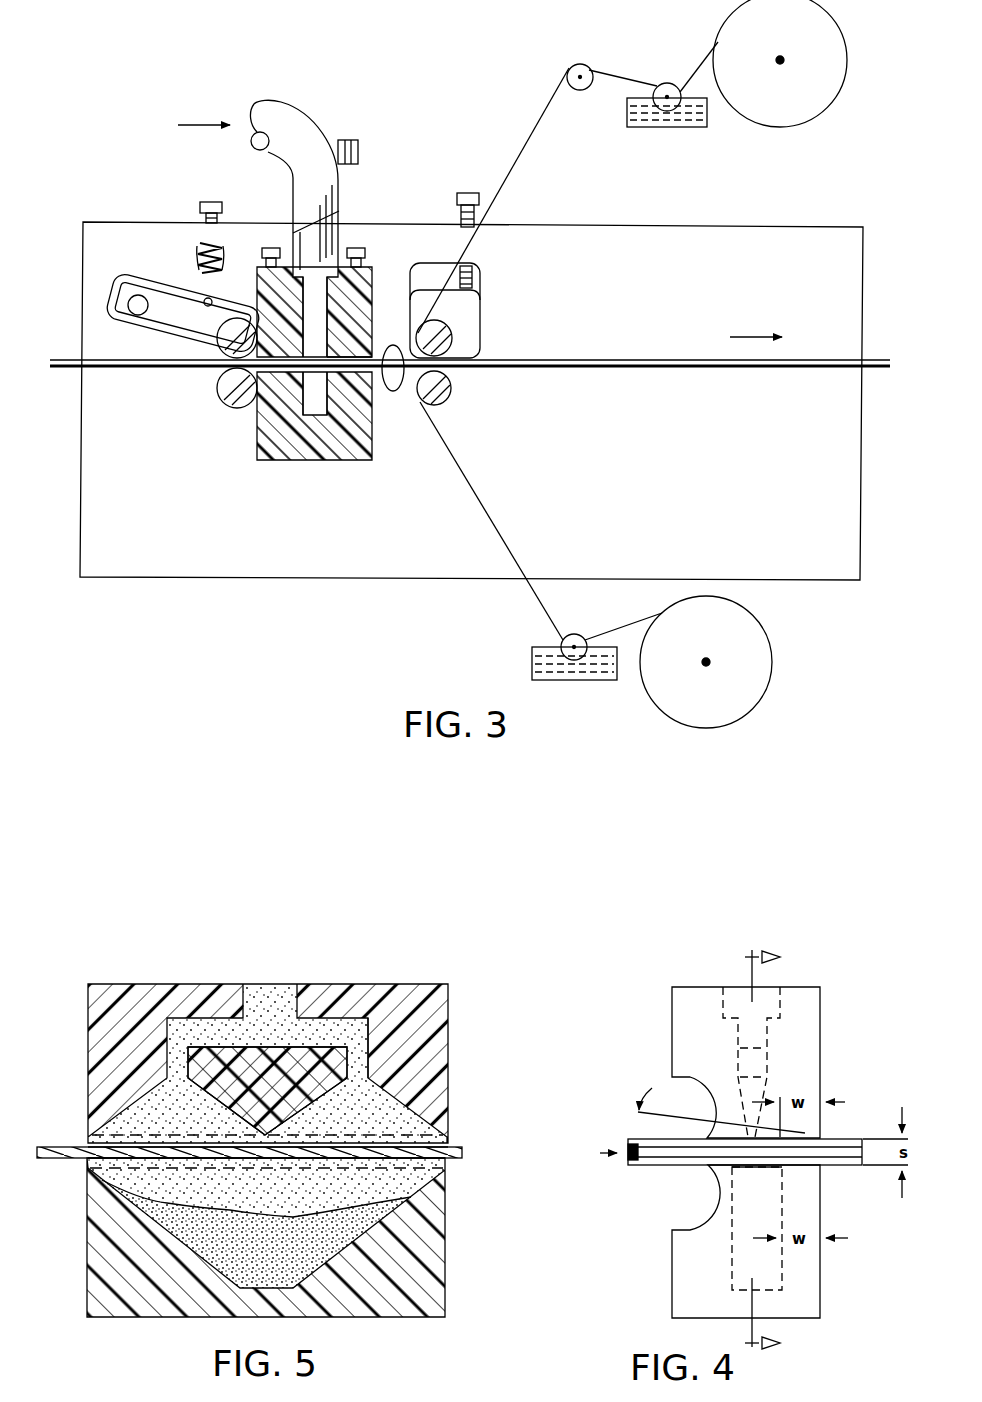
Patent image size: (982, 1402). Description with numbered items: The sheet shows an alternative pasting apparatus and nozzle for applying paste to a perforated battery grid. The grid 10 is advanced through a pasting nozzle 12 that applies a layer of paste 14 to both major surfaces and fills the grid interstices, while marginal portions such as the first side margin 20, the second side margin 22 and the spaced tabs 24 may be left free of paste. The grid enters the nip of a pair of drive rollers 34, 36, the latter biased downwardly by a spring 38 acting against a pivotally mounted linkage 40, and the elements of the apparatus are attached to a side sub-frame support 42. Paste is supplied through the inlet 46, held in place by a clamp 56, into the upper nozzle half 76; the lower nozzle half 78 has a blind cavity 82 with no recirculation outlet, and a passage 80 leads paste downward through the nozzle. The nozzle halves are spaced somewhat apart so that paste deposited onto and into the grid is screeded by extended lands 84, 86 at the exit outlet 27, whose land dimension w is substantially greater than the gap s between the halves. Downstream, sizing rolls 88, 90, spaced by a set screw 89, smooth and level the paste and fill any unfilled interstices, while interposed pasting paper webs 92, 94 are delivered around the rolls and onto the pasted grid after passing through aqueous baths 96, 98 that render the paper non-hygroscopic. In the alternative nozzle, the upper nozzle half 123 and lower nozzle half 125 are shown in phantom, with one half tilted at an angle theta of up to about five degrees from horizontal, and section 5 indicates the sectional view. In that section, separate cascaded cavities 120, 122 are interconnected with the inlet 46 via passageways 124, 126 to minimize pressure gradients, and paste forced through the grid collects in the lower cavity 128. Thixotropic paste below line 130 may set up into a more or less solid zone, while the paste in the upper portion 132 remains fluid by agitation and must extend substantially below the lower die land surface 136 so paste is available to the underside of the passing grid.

In FIG. 3, the grid 10 is at (111, 366).
In FIG. 4, the grid 10 is at (640, 1170).
In FIG. 3, the pasting nozzle 12 is at (247, 292).
In FIG. 3, the layer of paste 14 is at (394, 378).
In FIG. 4, the layer of paste 14 is at (835, 1138).
In FIG. 5, the first side margin 20 is at (458, 1147).
In FIG. 5, the second side margin 22 is at (80, 1147).
In FIG. 5, the spaced tabs 24 is at (52, 1160).
In FIG. 4, the exit outlet 27 is at (828, 1177).
In FIG. 3, the drive roller 34 is at (235, 396).
In FIG. 3, the drive roller 36 is at (222, 344).
In FIG. 3, the spring 38 is at (197, 251).
In FIG. 3, the pivotally mounted linkage 40 is at (137, 290).
In FIG. 3, the side sub-frame support 42 is at (411, 544).
In FIG. 3, the inlet 46 is at (298, 165).
In FIG. 5, the inlet 46 is at (247, 996).
In FIG. 4, the inlet 46 is at (727, 1000).
In FIG. 3, the conduit clamp 56 is at (357, 140).
In FIG. 3, the upper nozzle half 76 is at (358, 300).
In FIG. 3, the lower nozzle half 78 is at (317, 446).
In FIG. 3, the upper passage 80 is at (306, 305).
In FIG. 3, the blind cavity 82 is at (309, 396).
In FIG. 3, the extended land 84 is at (370, 322).
In FIG. 3, the extended land 86 is at (347, 373).
In FIG. 3, the sizing roll 88 is at (441, 338).
In FIG. 3, the set screw 89 is at (459, 206).
In FIG. 3, the sizing roll 90 is at (455, 390).
In FIG. 3, the pasting paper web 92 is at (485, 508).
In FIG. 3, the pasting paper web 94 is at (513, 166).
In FIG. 3, the aqueous bath 96 is at (641, 128).
In FIG. 3, the aqueous bath 98 is at (532, 654).
In FIG. 5, the cavity 120 is at (183, 1127).
In FIG. 5, the cavity 122 is at (373, 1128).
In FIG. 4, the upper nozzle half 123 is at (683, 1027).
In FIG. 5, the passageway 124 is at (185, 1028).
In FIG. 5, the lower nozzle half 125 is at (428, 1274).
In FIG. 4, the lower nozzle half 125 is at (692, 1285).
In FIG. 5, the passageway 126 is at (355, 1072).
In FIG. 5, the lower cavity 128 is at (276, 1266).
In FIG. 4, the lower cavity 128 is at (772, 1273).
In FIG. 5, the line 130 is at (167, 1200).
In FIG. 5, the upper portion of lower cavity 132 is at (407, 1184).
In FIG. 4, the lower die land surface 136 is at (800, 1167).
In FIG. 4, the section 5- 5 is at (771, 1149).